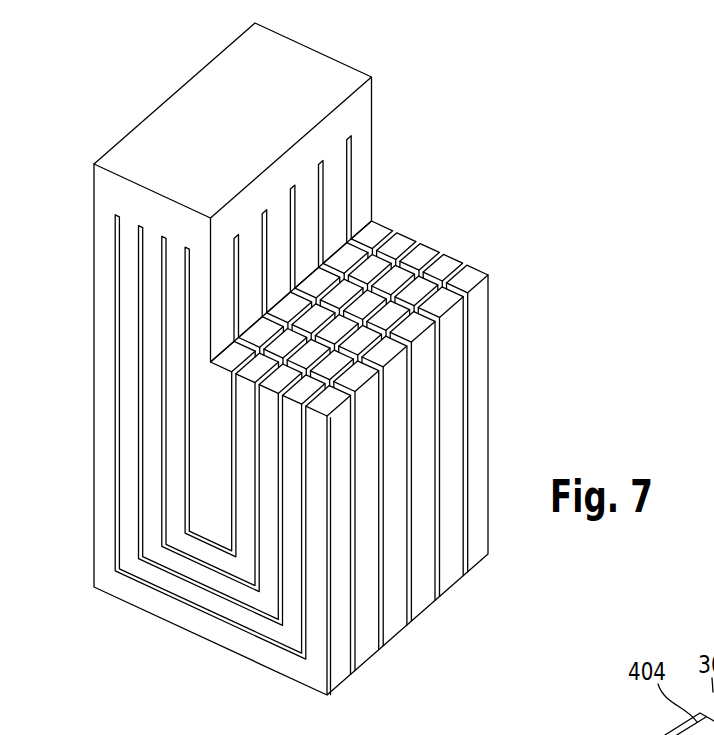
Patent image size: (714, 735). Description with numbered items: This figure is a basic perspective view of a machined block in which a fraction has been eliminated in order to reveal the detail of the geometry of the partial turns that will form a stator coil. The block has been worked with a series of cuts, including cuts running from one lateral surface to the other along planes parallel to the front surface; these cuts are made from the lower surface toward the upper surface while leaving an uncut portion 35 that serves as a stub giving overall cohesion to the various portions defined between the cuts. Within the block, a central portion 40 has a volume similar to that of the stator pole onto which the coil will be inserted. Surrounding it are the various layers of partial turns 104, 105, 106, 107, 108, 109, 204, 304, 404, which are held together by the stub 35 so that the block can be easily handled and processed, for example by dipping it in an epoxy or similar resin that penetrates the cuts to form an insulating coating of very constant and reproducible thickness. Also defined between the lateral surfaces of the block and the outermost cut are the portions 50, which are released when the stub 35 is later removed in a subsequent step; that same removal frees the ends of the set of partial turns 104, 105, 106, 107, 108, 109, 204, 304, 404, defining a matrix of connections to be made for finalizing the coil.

The uncut portion 35 is at (333, 128).
The central portion 40 is at (210, 474).
The portions defined between the lateral surfaces 50 is at (453, 345).
The partial turn 104 is at (405, 258).
The partial turn 105 is at (362, 268).
The partial turn 106 is at (303, 268).
The partial turn 107 is at (283, 310).
The partial turn 108 is at (256, 342).
The partial turn 109 is at (262, 372).
The partial turn 204 is at (430, 258).
The partial turn 304 is at (440, 262).
The partial turn 404 is at (455, 268).